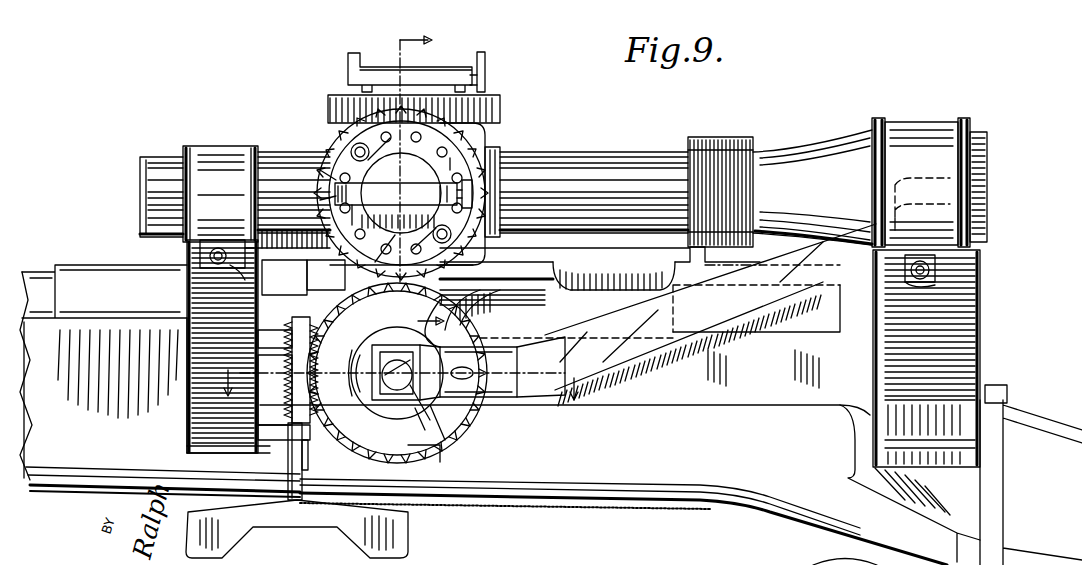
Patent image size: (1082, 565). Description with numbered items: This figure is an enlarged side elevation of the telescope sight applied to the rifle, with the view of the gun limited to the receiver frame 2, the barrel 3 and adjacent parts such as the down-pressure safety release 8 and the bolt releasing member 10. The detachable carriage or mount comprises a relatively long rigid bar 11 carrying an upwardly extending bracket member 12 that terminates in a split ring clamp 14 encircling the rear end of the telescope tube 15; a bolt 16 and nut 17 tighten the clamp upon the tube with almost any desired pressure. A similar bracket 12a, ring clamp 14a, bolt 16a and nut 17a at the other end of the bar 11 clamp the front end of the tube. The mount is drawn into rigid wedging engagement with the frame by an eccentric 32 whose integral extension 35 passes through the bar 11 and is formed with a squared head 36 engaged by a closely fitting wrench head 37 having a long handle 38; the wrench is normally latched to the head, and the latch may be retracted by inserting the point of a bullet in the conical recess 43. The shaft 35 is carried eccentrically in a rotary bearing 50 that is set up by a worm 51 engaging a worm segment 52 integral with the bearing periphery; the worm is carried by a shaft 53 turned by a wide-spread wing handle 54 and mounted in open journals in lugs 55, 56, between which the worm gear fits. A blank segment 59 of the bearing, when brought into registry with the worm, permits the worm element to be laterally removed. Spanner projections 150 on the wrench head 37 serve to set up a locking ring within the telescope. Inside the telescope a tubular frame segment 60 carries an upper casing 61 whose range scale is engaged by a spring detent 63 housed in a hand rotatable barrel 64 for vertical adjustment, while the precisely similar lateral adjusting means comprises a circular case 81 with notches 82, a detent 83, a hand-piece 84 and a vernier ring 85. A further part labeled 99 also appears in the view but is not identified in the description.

The receiver frame 2 is at (858, 482).
The barrel 3 is at (40, 268).
The down-pressure safety release 8 is at (1010, 392).
The bolt releasing member 10 is at (543, 321).
The rigid bar 11 is at (568, 319).
The bracket member 12 is at (667, 179).
The bracket member 12a is at (228, 346).
The split ring clamp 14 is at (965, 120).
The ring clamp 14a is at (220, 194).
The telescope tube 15 is at (150, 181).
The bolt 16 is at (940, 274).
The bolt 16a is at (200, 250).
The nut 17 is at (930, 282).
The nut 17a is at (230, 280).
The eccentric 32 is at (485, 322).
The integral extension 35 is at (455, 440).
The head 36 is at (470, 410).
The wrench head 37 is at (448, 418).
The long handle 38 is at (712, 296).
The conical recess 43 is at (505, 360).
The rotary bearing 50 is at (380, 345).
The worm 51 is at (258, 340).
The worm segment 52 is at (328, 312).
The shaft 53 is at (288, 468).
The wing handle 54 is at (240, 538).
The lug 55 is at (293, 361).
The lug 56 is at (310, 455).
The blank segment 59 is at (455, 300).
The tubular frame segment 60 is at (488, 140).
The upper casing 61 is at (342, 103).
The spring detent 63 is at (490, 85).
The hand rotatable barrel 64 is at (382, 75).
The circular case 81 is at (500, 165).
The notches 82 is at (318, 194).
The detent 83 is at (478, 195).
The hand-piece 84 is at (396, 184).
The vernier ring 85 is at (387, 248).
The graduated dial 99 is at (350, 150).
The spanner projections 150 is at (373, 388).